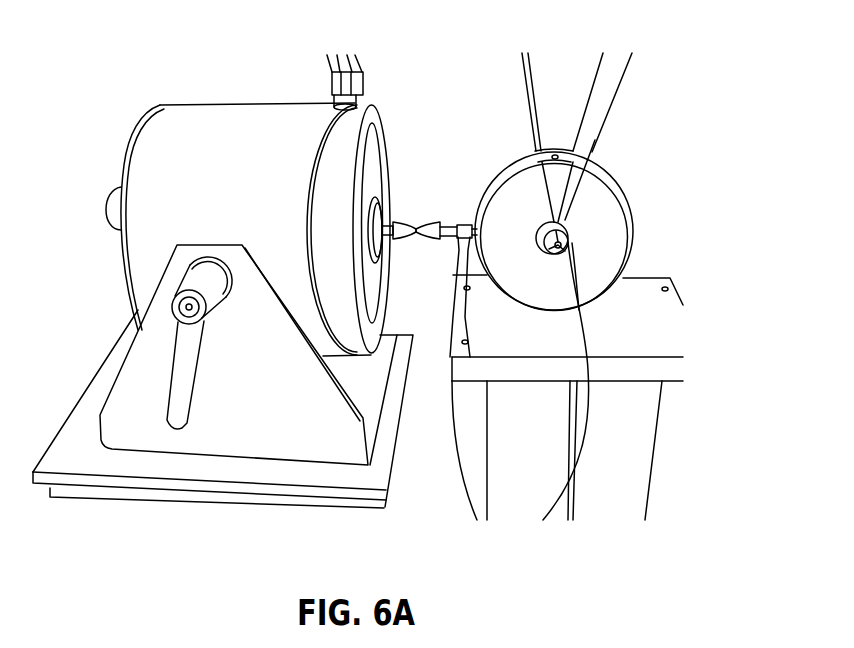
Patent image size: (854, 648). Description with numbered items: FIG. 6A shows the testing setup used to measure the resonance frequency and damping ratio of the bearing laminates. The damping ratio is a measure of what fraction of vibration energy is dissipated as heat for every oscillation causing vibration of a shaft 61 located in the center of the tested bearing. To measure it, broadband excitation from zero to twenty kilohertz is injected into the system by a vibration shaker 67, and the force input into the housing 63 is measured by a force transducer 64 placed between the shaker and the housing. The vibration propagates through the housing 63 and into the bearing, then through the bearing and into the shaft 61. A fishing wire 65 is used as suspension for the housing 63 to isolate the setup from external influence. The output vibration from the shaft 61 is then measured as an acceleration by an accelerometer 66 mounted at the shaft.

The shaft 61 is at (578, 238).
The housing 63 is at (600, 193).
The force transducer 64 is at (473, 250).
The fishing wire 65 is at (597, 152).
The accelerometer 66 is at (592, 251).
The vibration shaker 67 is at (242, 97).